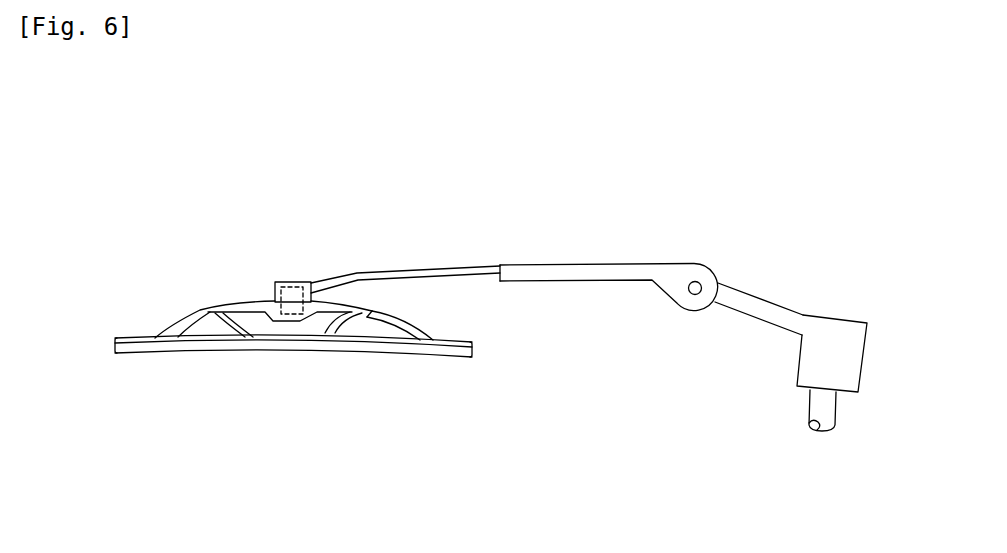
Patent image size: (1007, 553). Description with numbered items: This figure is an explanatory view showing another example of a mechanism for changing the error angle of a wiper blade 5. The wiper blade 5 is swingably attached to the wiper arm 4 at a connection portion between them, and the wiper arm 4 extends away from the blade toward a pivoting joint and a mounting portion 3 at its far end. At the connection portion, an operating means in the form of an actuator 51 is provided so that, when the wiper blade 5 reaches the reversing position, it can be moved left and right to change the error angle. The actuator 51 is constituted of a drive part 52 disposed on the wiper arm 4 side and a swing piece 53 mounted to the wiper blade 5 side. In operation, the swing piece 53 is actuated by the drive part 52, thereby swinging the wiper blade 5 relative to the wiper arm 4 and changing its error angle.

The grip portion 3 is at (812, 413).
The wiper arm 4 is at (600, 266).
The wiper blade 5 is at (309, 352).
The actuator 51 is at (288, 281).
The drive part 52 is at (284, 313).
The swing piece 53 is at (272, 322).